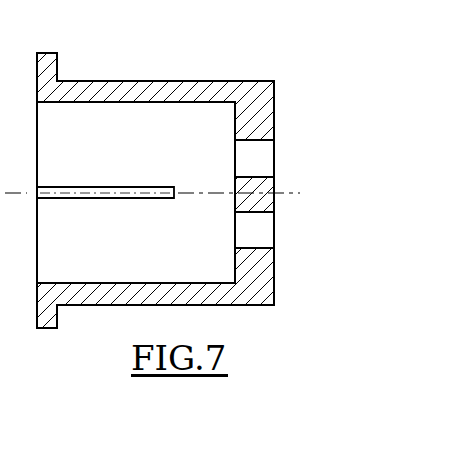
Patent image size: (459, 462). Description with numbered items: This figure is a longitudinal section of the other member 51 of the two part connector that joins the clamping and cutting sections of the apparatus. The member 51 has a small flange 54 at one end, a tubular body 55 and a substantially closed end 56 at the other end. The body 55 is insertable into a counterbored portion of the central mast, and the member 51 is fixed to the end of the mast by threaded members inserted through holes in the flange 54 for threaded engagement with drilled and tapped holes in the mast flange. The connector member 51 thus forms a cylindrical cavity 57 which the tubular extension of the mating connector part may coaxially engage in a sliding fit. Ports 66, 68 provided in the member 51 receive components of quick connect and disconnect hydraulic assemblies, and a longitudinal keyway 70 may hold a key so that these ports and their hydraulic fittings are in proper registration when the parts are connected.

The connector member 51 is at (117, 80).
The flange 54 is at (50, 62).
The tubular body 55 is at (190, 85).
The substantially closed end 56 is at (252, 282).
The cylindrical cavity 57 is at (152, 157).
The port 68 is at (253, 158).
The port 66 is at (253, 227).
The longitudinal keyway 70 is at (92, 199).